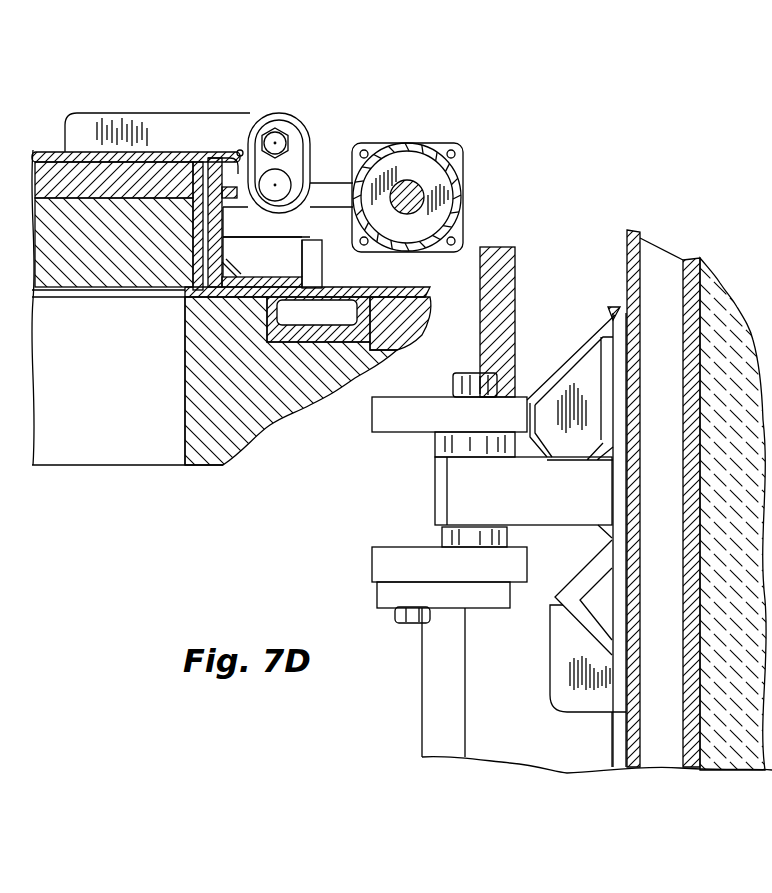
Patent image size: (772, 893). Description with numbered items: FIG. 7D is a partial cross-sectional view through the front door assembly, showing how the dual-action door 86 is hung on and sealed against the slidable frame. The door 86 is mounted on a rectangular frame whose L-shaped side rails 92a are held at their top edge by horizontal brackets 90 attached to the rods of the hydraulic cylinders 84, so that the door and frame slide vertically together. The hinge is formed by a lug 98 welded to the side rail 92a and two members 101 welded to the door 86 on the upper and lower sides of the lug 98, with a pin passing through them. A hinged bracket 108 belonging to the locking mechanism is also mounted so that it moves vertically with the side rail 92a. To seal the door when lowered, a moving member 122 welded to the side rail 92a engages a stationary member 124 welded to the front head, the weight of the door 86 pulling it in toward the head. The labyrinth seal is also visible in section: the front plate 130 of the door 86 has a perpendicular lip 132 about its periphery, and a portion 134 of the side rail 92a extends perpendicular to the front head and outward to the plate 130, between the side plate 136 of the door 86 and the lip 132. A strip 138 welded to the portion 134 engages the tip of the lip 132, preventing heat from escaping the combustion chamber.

The front plate 130 is at (45, 152).
The members 101 is at (186, 118).
The perpendicular lip 132 is at (227, 143).
The side plates 136 is at (200, 218).
The portions 134 is at (213, 242).
The strips 138 is at (228, 208).
The lugs 98 is at (288, 227).
The moving members 122 is at (280, 265).
The stationary members 124 is at (313, 270).
The hinged bracket 108 is at (300, 152).
The hydraulic cylinders 84 is at (398, 148).
The side rails 92a is at (193, 298).
The horizontal brackets 90 is at (513, 254).
The dual-action door 86 is at (428, 717).